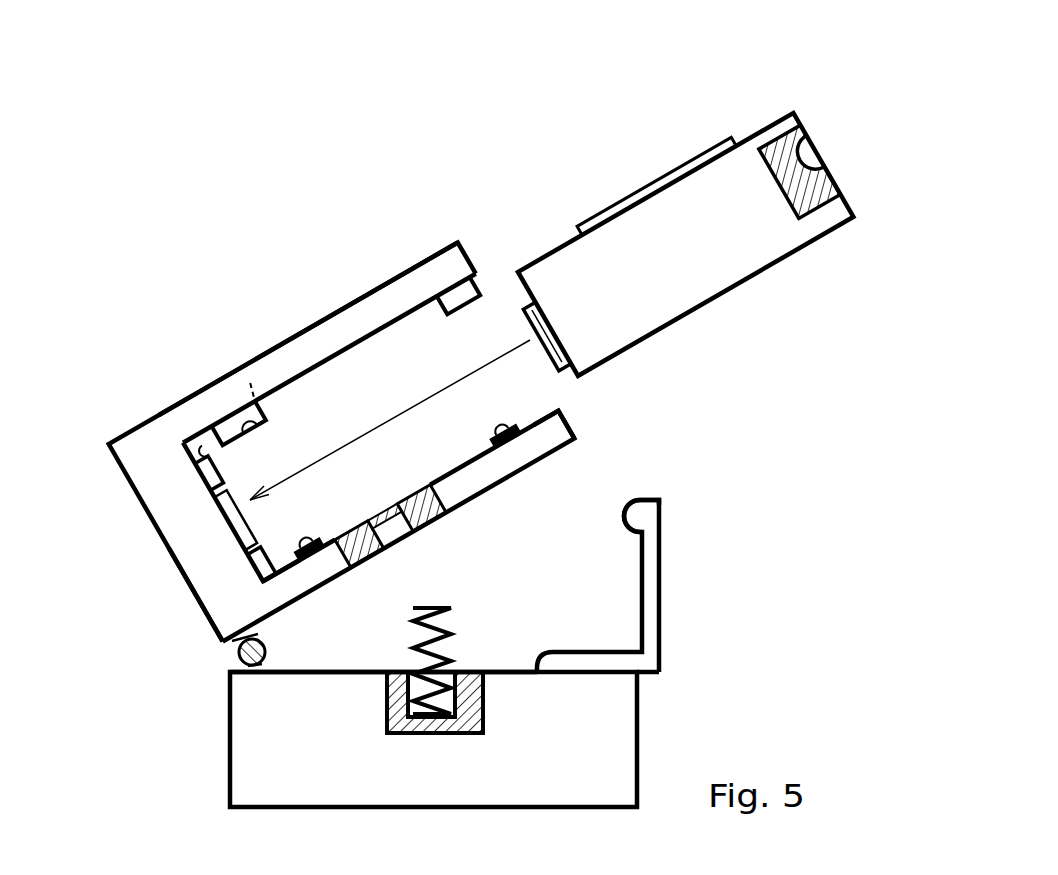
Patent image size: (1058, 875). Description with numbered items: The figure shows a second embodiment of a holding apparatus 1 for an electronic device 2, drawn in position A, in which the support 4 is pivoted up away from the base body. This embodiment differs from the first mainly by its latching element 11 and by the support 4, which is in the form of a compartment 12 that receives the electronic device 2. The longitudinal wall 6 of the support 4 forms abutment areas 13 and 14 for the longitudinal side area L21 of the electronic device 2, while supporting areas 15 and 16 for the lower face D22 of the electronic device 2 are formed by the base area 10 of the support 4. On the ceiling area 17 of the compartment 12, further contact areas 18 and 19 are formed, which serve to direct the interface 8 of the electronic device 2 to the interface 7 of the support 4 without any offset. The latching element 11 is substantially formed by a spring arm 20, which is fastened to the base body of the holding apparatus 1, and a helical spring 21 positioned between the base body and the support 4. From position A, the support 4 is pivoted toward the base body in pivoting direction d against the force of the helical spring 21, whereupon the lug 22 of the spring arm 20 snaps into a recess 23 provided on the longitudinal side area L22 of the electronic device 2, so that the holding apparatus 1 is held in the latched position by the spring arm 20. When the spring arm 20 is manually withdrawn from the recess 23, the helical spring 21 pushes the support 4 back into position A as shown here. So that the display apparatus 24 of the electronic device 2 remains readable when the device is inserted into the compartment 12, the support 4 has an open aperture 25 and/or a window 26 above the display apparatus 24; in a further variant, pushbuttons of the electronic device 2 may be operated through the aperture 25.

The holding apparatus 1 is at (695, 435).
The electronic device 2 is at (770, 105).
The support 4 is at (175, 512).
The longitudinal wall 6 is at (190, 537).
The interface 7 is at (190, 577).
The interface 8 is at (540, 318).
The base area 10 is at (540, 402).
The latching element 11 is at (688, 562).
The compartment 12 is at (163, 490).
The abutment area 13 is at (200, 453).
The abutment area 14 is at (268, 585).
The supporting area 15 is at (307, 530).
The supporting area 16 is at (498, 440).
The ceiling area 17 is at (357, 340).
The contact area 18 is at (237, 433).
The contact area 19 is at (466, 313).
The spring arm 20 is at (650, 607).
The helical spring 21 is at (452, 637).
The lug 22 is at (637, 517).
The recess 23 is at (820, 153).
The display apparatus 24 is at (665, 167).
The open aperture 25 is at (275, 363).
The window 26 is at (318, 313).
The position A is at (600, 437).
The pivoting direction d is at (602, 595).
The lower face D22 is at (775, 263).
The longitudinal side area L21 is at (520, 292).
The longitudinal side area L22 is at (792, 110).